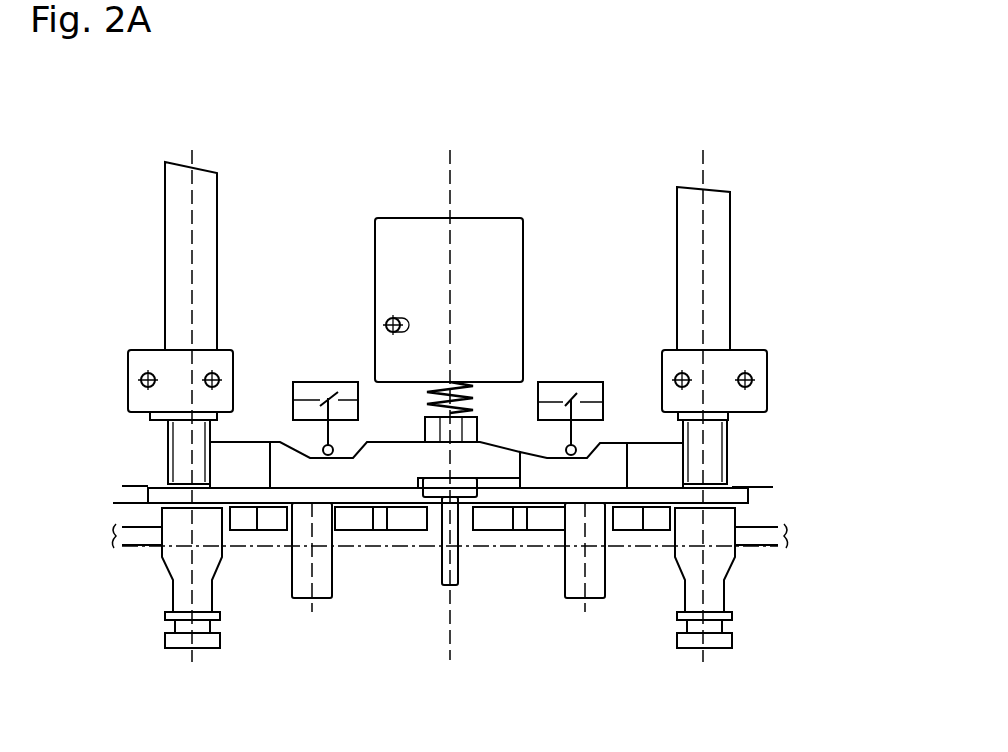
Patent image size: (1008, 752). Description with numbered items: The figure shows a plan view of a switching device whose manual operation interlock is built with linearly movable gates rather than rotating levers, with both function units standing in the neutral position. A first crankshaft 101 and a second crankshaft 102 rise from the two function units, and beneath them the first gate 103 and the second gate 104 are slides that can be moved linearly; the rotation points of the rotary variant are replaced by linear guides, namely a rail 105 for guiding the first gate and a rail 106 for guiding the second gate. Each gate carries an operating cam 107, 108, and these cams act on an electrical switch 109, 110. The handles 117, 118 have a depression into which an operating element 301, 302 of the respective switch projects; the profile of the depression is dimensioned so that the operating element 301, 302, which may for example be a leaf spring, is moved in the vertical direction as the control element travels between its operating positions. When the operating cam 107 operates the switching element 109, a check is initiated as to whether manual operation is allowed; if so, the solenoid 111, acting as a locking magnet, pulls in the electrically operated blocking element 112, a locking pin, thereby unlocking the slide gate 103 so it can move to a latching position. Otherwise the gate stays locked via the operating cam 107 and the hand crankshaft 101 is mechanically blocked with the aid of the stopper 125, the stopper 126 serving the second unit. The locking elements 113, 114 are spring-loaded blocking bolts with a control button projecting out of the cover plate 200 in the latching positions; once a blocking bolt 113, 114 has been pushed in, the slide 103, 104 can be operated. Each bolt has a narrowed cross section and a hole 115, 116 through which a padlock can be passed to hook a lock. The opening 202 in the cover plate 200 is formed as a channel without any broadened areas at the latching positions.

The first crankshaft 101 is at (178, 190).
The second crankshaft 102 is at (715, 207).
The first gate 103 is at (143, 504).
The second gate 104 is at (737, 495).
The rail for guiding the first gate 105 is at (122, 486).
The rail for guiding the second gate 106 is at (773, 487).
The operating cam 107 is at (346, 470).
The operating cam 108 is at (562, 468).
The switch 109 is at (305, 382).
The switch 110 is at (562, 382).
The solenoid 111 is at (473, 242).
The electrically operated blocking element 112 is at (443, 528).
The locking element 113 is at (168, 627).
The locking element 114 is at (713, 635).
The hole in the locking element 115 is at (170, 575).
The hole in the locking element 116 is at (731, 584).
The handle 117 is at (310, 582).
The handle 118 is at (590, 582).
The stopper 125 is at (250, 468).
The stopper 126 is at (642, 467).
The cover plate 200 is at (782, 546).
The opening in the cover plate 202 is at (618, 545).
The operating element of the electrical switch 301 is at (331, 398).
The operating element of the electrical switch 302 is at (574, 440).